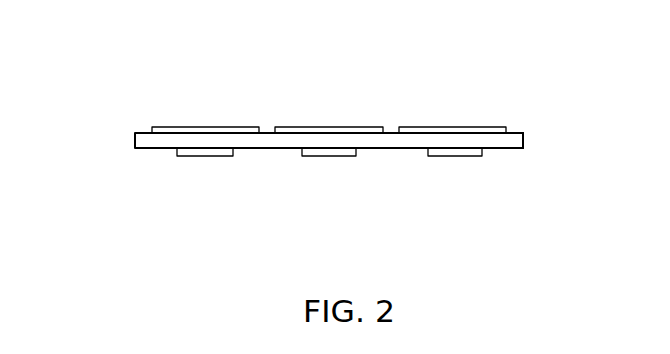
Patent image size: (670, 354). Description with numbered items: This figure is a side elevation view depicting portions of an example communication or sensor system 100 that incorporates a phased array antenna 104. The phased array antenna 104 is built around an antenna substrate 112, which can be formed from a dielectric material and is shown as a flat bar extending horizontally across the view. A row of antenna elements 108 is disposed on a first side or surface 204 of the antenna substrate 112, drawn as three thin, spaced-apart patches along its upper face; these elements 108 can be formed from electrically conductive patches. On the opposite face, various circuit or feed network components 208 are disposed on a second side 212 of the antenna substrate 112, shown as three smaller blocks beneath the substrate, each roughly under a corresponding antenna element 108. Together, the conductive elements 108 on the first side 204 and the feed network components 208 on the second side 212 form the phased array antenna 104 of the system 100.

The communication or sensor system 100 is at (136, 102).
The phased array antenna 104 is at (135, 140).
The antenna elements 108 is at (203, 127).
The circuit or feed network components 208 is at (205, 157).
The first side or surface 204 is at (513, 131).
The antenna substrate 112 is at (523, 140).
The second side 212 is at (513, 149).